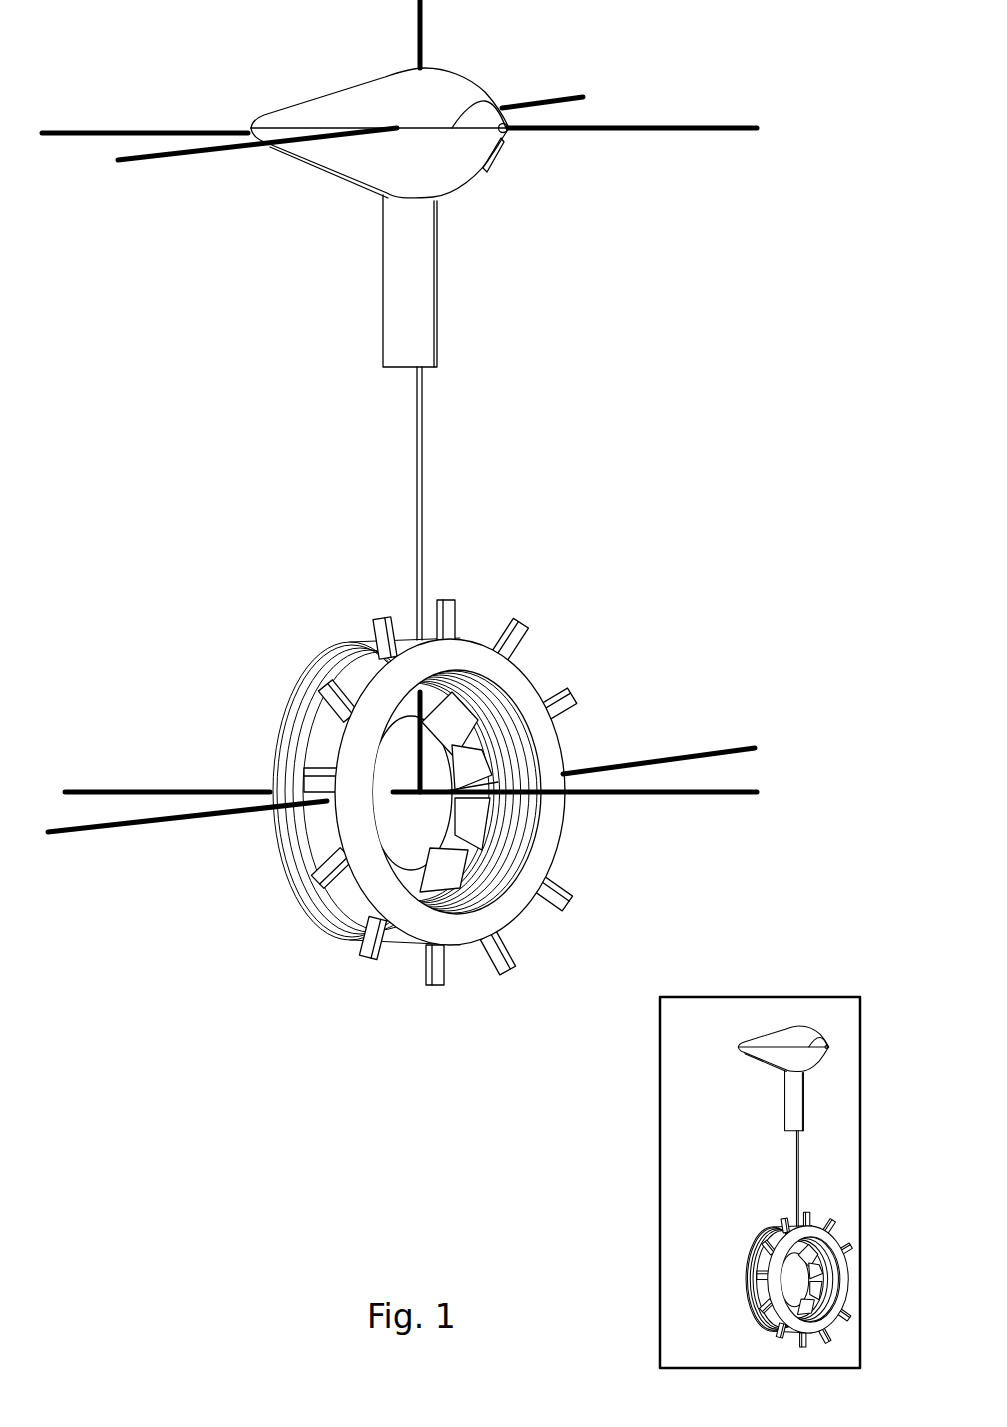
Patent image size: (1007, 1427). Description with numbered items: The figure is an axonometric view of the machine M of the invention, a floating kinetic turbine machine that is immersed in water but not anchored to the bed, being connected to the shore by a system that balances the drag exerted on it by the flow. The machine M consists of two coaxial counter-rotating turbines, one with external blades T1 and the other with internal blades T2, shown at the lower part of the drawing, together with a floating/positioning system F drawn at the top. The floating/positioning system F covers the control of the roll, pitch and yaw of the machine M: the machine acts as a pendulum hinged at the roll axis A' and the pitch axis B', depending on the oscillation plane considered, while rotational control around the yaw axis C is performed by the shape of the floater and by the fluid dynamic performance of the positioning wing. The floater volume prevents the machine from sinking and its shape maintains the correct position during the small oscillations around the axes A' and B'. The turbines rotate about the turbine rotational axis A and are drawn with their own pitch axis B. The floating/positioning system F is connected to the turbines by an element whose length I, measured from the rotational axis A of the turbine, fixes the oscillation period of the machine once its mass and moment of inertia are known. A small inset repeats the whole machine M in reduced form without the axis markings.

The yaw axis C is at (421, 2).
The machine roll axis A' is at (450, 198).
The machine pitch axis B' is at (350, 217).
The floating/positioning system F is at (420, 157).
The element length I is at (416, 505).
The turbine with external blades T1 is at (531, 700).
The turbine with internal blades T2 is at (292, 787).
The turbine rotational axis A is at (458, 855).
The turbine pitch axis B is at (401, 879).
The machine M is at (760, 1182).